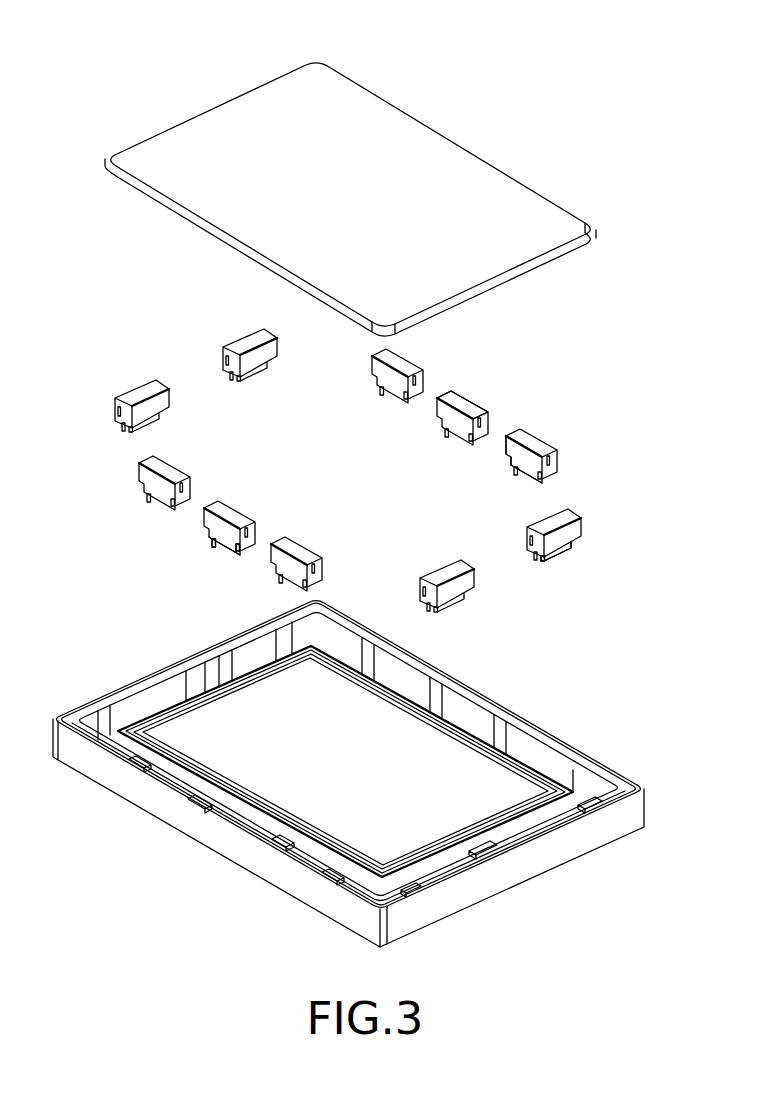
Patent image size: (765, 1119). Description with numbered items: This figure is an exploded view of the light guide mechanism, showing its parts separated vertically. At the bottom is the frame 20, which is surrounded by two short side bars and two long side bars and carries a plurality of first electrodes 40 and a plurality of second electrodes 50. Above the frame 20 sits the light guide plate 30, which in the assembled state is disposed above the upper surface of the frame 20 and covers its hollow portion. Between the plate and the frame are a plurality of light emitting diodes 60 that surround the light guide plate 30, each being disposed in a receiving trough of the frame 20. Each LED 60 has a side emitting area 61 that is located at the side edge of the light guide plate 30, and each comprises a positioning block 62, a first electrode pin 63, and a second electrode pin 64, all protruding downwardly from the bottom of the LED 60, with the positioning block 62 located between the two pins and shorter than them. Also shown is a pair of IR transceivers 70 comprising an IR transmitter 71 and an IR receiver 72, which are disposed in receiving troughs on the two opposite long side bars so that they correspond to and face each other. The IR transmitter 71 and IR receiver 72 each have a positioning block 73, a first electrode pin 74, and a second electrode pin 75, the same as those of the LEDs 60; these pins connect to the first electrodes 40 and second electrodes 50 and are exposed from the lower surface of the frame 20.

The frame 20 is at (173, 813).
The light guide plate 30 is at (252, 138).
The first electrodes 40 is at (510, 723).
The second electrodes 50 is at (570, 770).
The light emitting diodes 60 is at (138, 395).
The side emitting area 61 is at (512, 452).
The positioning block 62 is at (522, 472).
The first electrode pin 63 is at (567, 552).
The second electrode pin 64 is at (543, 567).
The pair of IR transceivers 70 is at (442, 425).
The IR transmitter 71 is at (465, 403).
The IR receiver 72 is at (227, 508).
The positioning block 73 is at (223, 543).
The first electrode pin 74 is at (212, 543).
The second electrode pin 75 is at (242, 551).